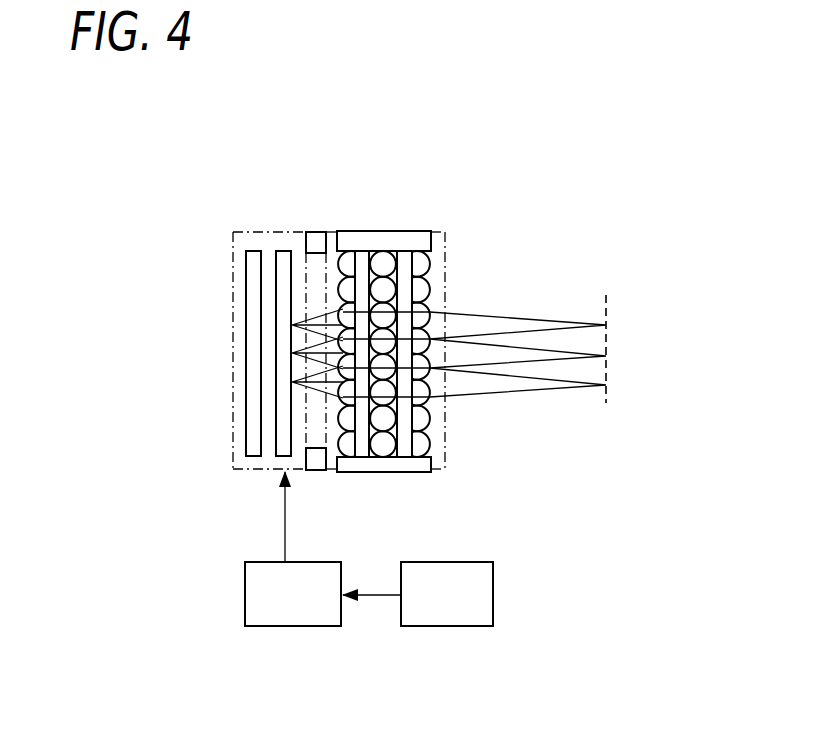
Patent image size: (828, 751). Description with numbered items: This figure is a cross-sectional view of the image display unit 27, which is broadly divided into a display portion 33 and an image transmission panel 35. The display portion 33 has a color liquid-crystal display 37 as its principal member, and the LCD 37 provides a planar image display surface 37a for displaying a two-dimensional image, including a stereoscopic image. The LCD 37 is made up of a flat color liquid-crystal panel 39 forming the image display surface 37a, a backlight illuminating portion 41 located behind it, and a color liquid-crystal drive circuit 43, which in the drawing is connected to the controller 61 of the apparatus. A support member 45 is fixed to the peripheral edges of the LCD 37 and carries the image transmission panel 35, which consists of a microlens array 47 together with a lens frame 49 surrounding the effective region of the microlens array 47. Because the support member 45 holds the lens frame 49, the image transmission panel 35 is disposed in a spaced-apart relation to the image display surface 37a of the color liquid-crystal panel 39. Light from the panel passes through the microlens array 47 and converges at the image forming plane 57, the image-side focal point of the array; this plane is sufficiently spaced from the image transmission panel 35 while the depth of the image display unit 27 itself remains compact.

The image display unit 27 is at (431, 320).
The display portion 33 is at (305, 332).
The image transmission panel 35 is at (439, 217).
The color liquid-crystal display 37 is at (232, 240).
The image display surface 37a is at (326, 445).
The color liquid-crystal panel 39 is at (282, 250).
The backlight illuminating portion 41 is at (246, 313).
The color liquid-crystal drive circuit 43 is at (245, 598).
The support member 45 is at (314, 232).
The microlens array 47 is at (427, 428).
The lens frame 49 is at (423, 461).
The image forming plane 57 is at (608, 298).
The controller 61 is at (493, 575).